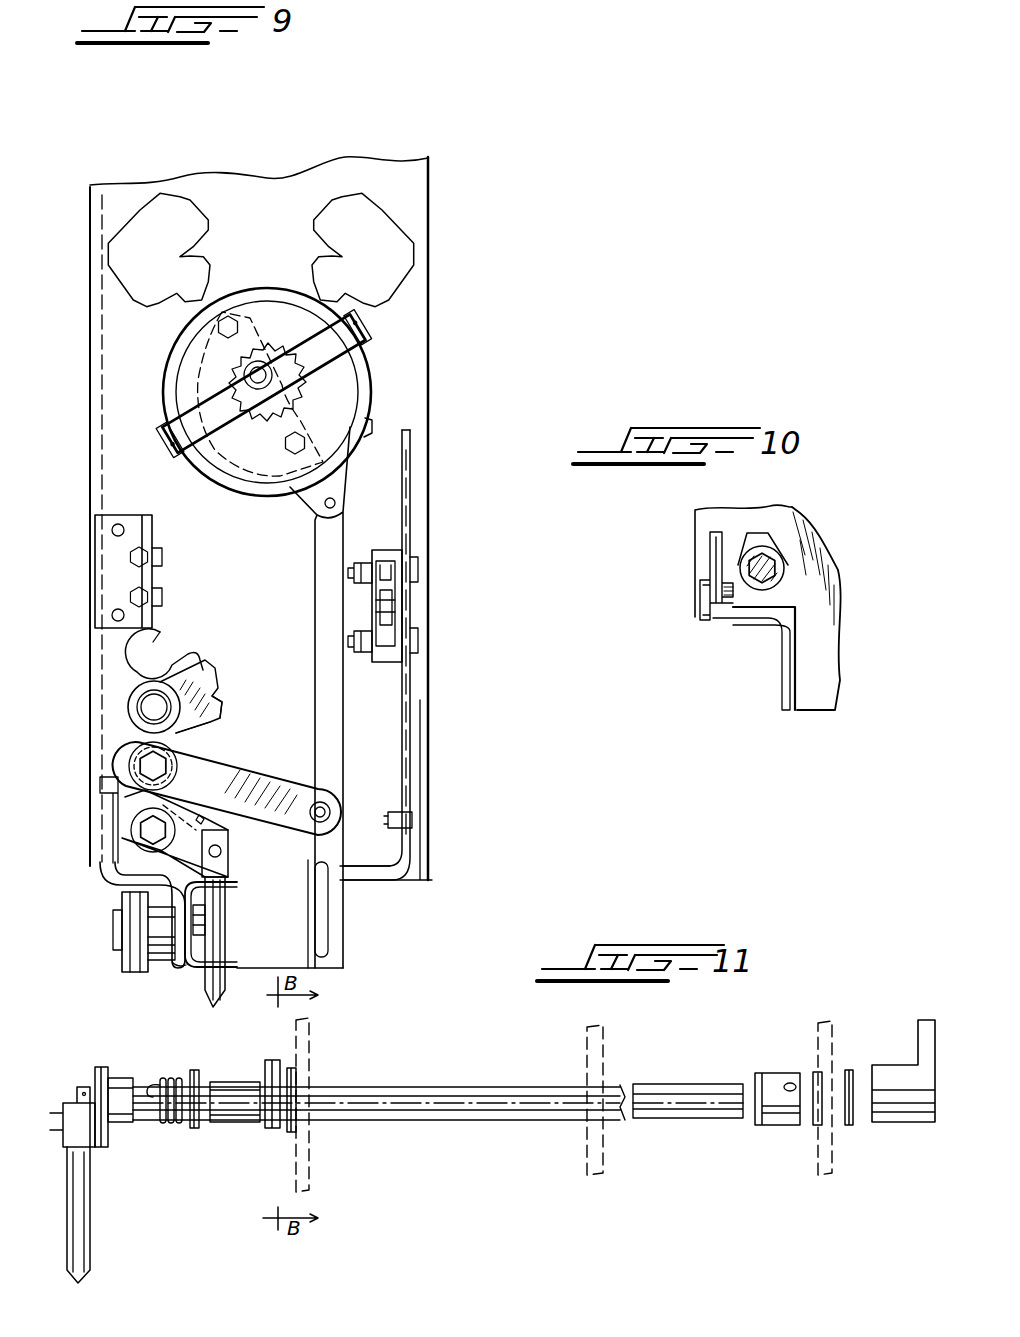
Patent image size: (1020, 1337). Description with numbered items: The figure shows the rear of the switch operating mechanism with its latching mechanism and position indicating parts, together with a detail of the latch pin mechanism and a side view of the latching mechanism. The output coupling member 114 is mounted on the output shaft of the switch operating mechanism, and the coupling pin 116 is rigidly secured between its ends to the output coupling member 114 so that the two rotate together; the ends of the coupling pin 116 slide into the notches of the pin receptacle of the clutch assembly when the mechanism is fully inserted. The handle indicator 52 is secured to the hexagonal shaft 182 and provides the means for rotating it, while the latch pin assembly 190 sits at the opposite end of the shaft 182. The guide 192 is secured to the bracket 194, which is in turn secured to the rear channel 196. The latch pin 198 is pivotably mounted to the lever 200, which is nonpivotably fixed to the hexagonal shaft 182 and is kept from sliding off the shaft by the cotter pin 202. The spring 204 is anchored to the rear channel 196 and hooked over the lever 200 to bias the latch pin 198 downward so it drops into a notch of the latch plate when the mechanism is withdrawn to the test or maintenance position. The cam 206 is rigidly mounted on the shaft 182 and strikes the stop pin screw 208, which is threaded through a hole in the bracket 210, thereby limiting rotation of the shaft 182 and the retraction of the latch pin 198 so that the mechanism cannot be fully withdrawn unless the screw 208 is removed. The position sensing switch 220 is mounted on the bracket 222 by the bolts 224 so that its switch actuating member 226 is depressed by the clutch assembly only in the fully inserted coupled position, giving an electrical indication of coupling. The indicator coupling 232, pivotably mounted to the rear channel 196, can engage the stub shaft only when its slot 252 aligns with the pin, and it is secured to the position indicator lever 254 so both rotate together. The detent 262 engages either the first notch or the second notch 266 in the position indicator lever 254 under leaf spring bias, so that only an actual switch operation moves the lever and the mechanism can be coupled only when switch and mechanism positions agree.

In FIG. 11, the handle indicator 52 is at (893, 1070).
In FIG. 9, the output coupling member 114 is at (246, 480).
In FIG. 9, the coupling pin 116 is at (198, 452).
In FIG. 9, the hexagonal shaft 182 is at (180, 792).
In FIG. 10, the hexagonal shaft 182 is at (777, 565).
In FIG. 11, the hexagonal shaft 182 is at (383, 1082).
In FIG. 9, the latch pin assembly 190 is at (295, 913).
In FIG. 11, the latch pin assembly 190 is at (166, 1168).
In FIG. 9, the guide 192 is at (193, 966).
In FIG. 9, the bracket 194 is at (173, 965).
In FIG. 9, the rear channel 196 is at (428, 304).
In FIG. 9, the latch pin 198 is at (227, 942).
In FIG. 11, the latch pin 198 is at (90, 1190).
In FIG. 9, the lever 200 is at (124, 886).
In FIG. 11, the lever 200 is at (105, 1068).
In FIG. 11, the cotter pin 202 is at (83, 1087).
In FIG. 9, the spring 204 is at (228, 822).
In FIG. 10, the cam 206 is at (767, 542).
In FIG. 11, the cam 206 is at (500, 1130).
In FIG. 10, the stop pin screw 208 is at (710, 607).
In FIG. 10, the bracket 210 is at (783, 658).
In FIG. 9, the position sensing switch 220 is at (392, 553).
In FIG. 9, the bracket 222 is at (406, 705).
In FIG. 9, the bolts 224 is at (418, 645).
In FIG. 9, the switch actuating member 226 is at (390, 618).
In FIG. 9, the indicator coupling 232 is at (182, 731).
In FIG. 9, the slot 252 is at (200, 662).
In FIG. 9, the position indicator lever 254 is at (214, 676).
In FIG. 9, the detent 262 is at (168, 637).
In FIG. 9, the second notch 266 is at (221, 705).